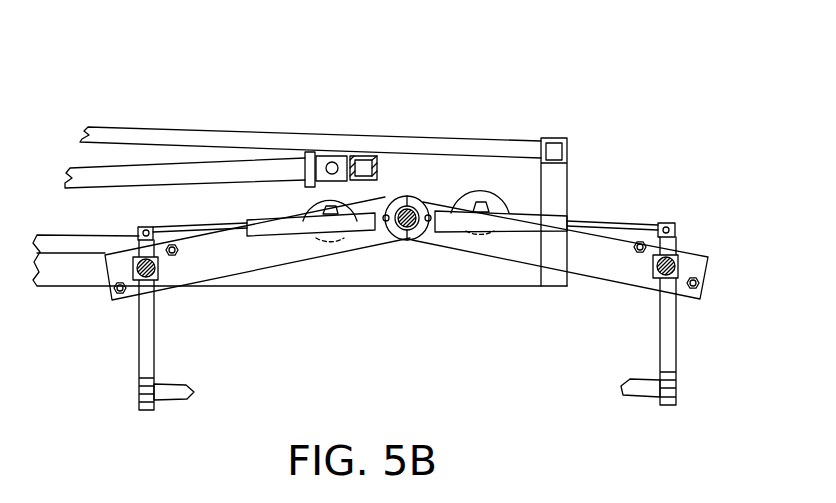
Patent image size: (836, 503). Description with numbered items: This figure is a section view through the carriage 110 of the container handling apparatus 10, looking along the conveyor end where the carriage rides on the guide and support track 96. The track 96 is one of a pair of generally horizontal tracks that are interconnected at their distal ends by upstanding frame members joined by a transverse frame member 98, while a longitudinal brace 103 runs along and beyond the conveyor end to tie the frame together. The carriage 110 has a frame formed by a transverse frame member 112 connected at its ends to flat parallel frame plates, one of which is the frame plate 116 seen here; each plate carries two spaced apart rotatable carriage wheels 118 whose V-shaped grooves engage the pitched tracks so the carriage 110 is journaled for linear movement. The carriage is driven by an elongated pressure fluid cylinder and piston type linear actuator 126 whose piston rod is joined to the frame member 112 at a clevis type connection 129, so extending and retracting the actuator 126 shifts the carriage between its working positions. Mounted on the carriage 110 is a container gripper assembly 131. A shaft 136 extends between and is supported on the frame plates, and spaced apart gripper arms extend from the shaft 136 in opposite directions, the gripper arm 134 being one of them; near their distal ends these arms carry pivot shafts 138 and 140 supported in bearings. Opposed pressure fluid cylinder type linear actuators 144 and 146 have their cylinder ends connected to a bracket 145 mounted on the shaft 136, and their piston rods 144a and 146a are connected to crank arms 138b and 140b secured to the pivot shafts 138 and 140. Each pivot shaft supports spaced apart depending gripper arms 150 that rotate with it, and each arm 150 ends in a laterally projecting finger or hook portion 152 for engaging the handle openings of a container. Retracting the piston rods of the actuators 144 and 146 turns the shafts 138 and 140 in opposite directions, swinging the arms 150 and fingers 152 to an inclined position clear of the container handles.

The apparatus 10 is at (157, 58).
The carriage 110 is at (460, 93).
The longitudinal brace 103 is at (350, 135).
The linear actuator 126 is at (140, 164).
The clevis type connection 129 is at (322, 152).
The transverse frame member 112 is at (377, 167).
The frame plate 116 is at (508, 153).
The carriage wheel 118 is at (297, 203).
The transverse frame member 98 is at (553, 138).
The bracket 145 is at (387, 224).
The shaft 136 is at (404, 241).
The linear actuator 144 is at (268, 237).
The piston rod 144a is at (181, 225).
The linear actuator 146 is at (522, 233).
The piston rod 146a is at (640, 222).
The guide and support track 96 is at (283, 287).
The gripper arm 134 is at (593, 277).
The container gripper assembly 131 is at (693, 317).
The pivot shaft 138 is at (152, 281).
The crank arm 138b is at (138, 246).
The pivot shaft 140 is at (678, 262).
The crank arm 140b is at (675, 229).
The gripper arm 150 is at (139, 358).
The finger or hook portion 152 is at (188, 399).